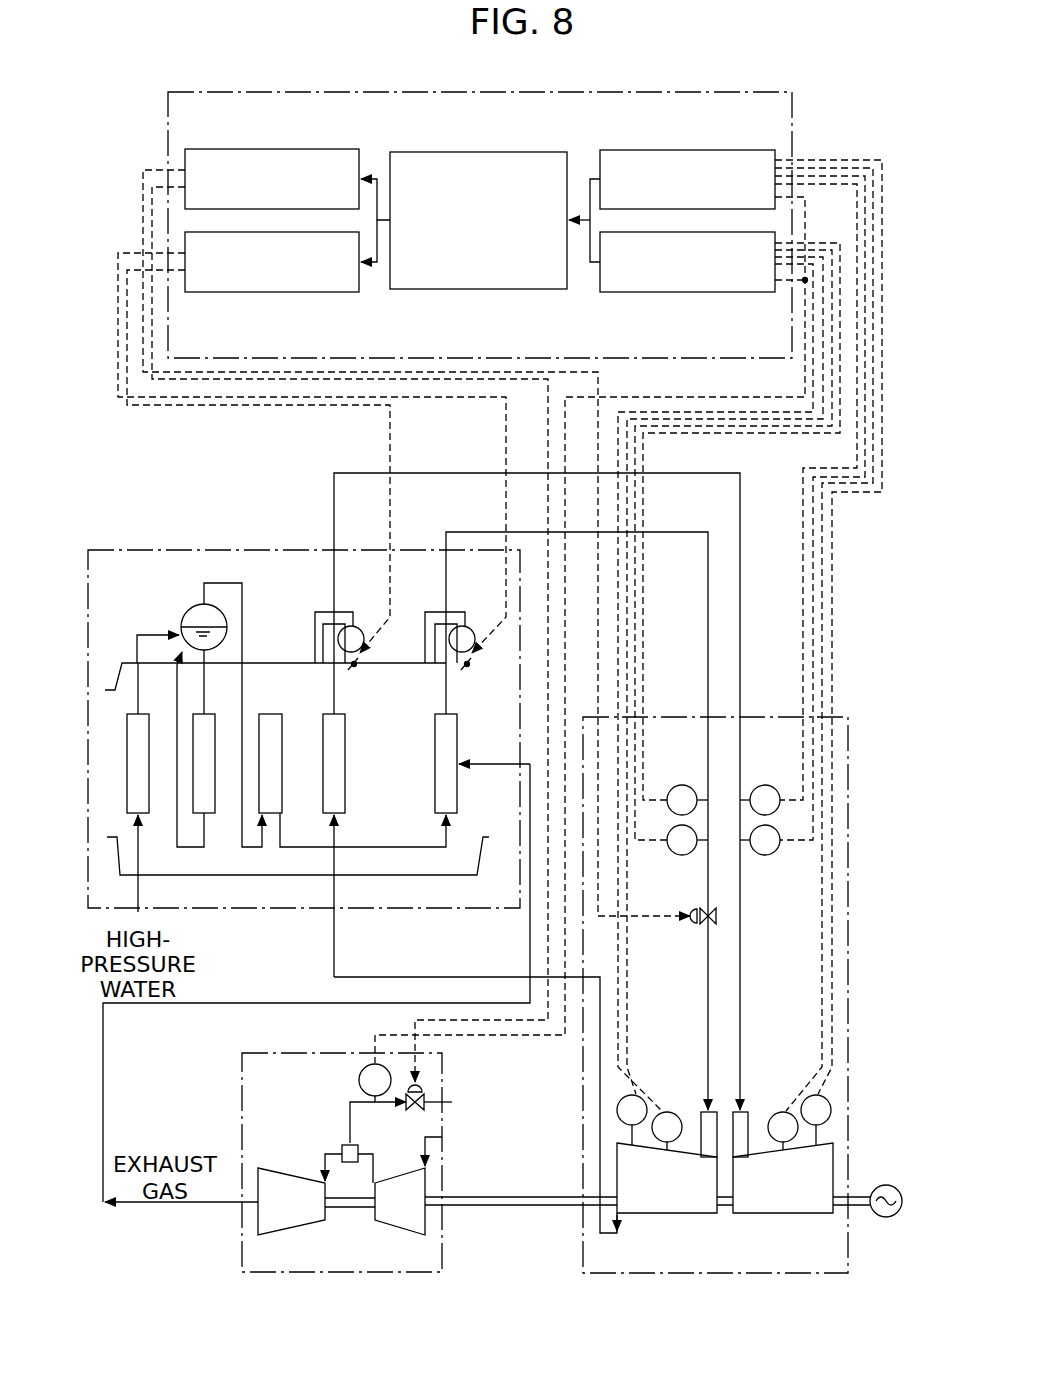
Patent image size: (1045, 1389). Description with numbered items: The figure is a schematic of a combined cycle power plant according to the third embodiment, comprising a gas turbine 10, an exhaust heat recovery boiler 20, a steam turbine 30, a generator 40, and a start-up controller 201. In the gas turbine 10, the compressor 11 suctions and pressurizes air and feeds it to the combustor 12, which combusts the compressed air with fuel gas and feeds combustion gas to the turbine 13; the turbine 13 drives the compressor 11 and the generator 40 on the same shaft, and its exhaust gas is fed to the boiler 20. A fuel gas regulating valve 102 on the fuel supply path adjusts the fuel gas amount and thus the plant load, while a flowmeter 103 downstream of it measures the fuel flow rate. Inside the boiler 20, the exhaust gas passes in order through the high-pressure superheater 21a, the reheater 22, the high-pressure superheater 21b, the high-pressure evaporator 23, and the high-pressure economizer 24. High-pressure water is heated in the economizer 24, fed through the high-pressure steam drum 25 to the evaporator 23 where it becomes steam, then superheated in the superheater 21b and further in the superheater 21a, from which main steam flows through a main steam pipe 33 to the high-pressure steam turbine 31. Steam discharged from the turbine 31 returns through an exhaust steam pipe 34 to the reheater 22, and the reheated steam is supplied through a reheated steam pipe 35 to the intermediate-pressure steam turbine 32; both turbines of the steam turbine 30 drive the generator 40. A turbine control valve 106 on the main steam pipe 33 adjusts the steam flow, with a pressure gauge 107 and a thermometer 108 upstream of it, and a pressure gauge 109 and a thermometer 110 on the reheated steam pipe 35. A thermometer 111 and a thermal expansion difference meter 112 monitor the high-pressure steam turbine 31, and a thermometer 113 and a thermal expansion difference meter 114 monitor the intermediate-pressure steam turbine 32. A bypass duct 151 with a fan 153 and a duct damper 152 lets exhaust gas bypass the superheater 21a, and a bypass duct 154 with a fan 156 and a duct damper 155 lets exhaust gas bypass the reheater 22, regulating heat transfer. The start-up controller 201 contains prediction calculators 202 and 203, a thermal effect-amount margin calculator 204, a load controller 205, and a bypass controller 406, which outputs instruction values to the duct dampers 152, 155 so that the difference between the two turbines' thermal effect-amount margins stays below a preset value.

The start-up controller 201 is at (792, 112).
The load controller 205 is at (276, 149).
The thermal effect-amount margin calculator 204 is at (462, 152).
The prediction calculator 203 is at (682, 150).
The bypass controller 406 is at (282, 292).
The prediction calculator 202 is at (688, 292).
The exhaust heat recovery boiler 20 is at (113, 550).
The high-pressure steam drum 25 is at (183, 613).
The high-pressure economizer 24 is at (140, 713).
The high-pressure evaporator 23 is at (206, 713).
The high-pressure superheater 21b is at (272, 713).
The reheater 22 is at (345, 808).
The high-pressure superheater 21a is at (457, 808).
The bypass duct 154 is at (316, 616).
The fan 156 is at (354, 626).
The duct damper 155 is at (356, 672).
The bypass duct 151 is at (430, 616).
The fan 153 is at (468, 626).
The duct damper 152 is at (469, 672).
The reheated steam pipe 35 is at (740, 592).
The main steam pipe 33 is at (708, 592).
The exhaust steam pipe 34 is at (598, 1168).
The turbine control valve 106 is at (700, 924).
The steam turbine 30 is at (583, 1244).
The pressure gauge 107 is at (685, 783).
The thermometer 108 is at (685, 855).
The pressure gauge 109 is at (765, 783).
The thermometer 110 is at (765, 855).
The high-pressure steam turbine 31 is at (663, 1213).
The intermediate-pressure steam turbine 32 is at (782, 1213).
The thermal expansion difference meter 112 is at (634, 1092).
The thermometer 111 is at (667, 1112).
The thermometer 113 is at (778, 1112).
The thermal expansion difference meter 114 is at (813, 1092).
The generator 40 is at (889, 1184).
The gas turbine 10 is at (242, 1070).
The turbine 13 is at (310, 1216).
The compressor 11 is at (392, 1216).
The combustor 12 is at (342, 1145).
The fuel gas regulating valve 102 is at (414, 1112).
The flowmeter 103 is at (359, 1084).